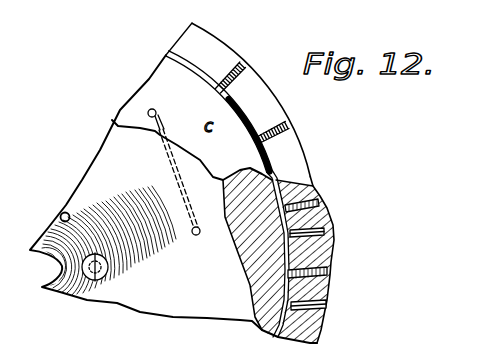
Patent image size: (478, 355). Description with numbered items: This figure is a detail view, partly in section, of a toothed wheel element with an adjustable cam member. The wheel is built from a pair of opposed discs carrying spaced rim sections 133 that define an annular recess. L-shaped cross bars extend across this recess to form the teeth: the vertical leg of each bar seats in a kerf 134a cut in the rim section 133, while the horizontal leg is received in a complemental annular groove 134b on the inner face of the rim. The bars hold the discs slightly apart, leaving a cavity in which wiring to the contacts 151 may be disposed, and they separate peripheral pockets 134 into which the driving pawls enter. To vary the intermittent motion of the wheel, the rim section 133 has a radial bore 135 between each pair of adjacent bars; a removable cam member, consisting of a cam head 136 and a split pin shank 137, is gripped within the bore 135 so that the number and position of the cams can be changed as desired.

The rim section 133 is at (317, 187).
The peripheral pocket 134 is at (293, 150).
The kerf 134a is at (329, 277).
The annular groove 134b is at (278, 261).
The radial bore 135 is at (328, 307).
The cam head 136 is at (338, 230).
The pin shank 137 is at (322, 222).
The contact 151 is at (148, 112).